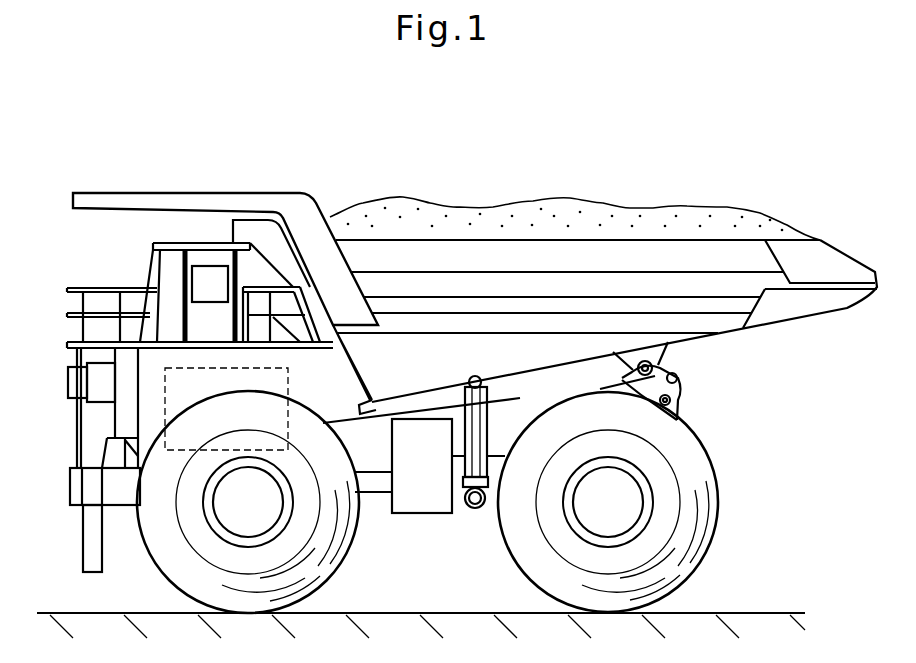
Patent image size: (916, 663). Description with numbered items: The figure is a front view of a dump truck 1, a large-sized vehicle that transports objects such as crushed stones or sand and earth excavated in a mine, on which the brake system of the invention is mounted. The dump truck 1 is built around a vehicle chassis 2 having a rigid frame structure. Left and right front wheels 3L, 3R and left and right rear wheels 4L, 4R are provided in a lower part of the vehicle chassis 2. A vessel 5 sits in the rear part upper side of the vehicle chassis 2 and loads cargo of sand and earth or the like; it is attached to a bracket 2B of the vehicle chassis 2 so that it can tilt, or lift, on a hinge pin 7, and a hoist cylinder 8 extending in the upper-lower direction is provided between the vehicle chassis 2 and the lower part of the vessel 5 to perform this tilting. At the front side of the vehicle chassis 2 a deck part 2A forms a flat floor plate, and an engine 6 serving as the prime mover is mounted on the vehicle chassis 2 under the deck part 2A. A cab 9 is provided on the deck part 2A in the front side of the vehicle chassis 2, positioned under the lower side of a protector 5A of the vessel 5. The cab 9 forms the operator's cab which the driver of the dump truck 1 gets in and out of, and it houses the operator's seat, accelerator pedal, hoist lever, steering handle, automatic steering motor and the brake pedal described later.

The dump truck 1 is at (303, 160).
The vehicle chassis 2 is at (374, 455).
The deck part 2A is at (123, 342).
The bracket 2B is at (672, 386).
The left front wheel 3L is at (213, 502).
The right front wheel 3R is at (155, 540).
The left rear wheel 4L is at (653, 502).
The right rear wheel 4R is at (707, 502).
The vessel 5 is at (642, 248).
The protector 5A is at (148, 193).
The engine 6 is at (165, 417).
The hinge pin 7 is at (662, 363).
The hoist cylinder 8 is at (468, 458).
The cab 9 is at (208, 273).